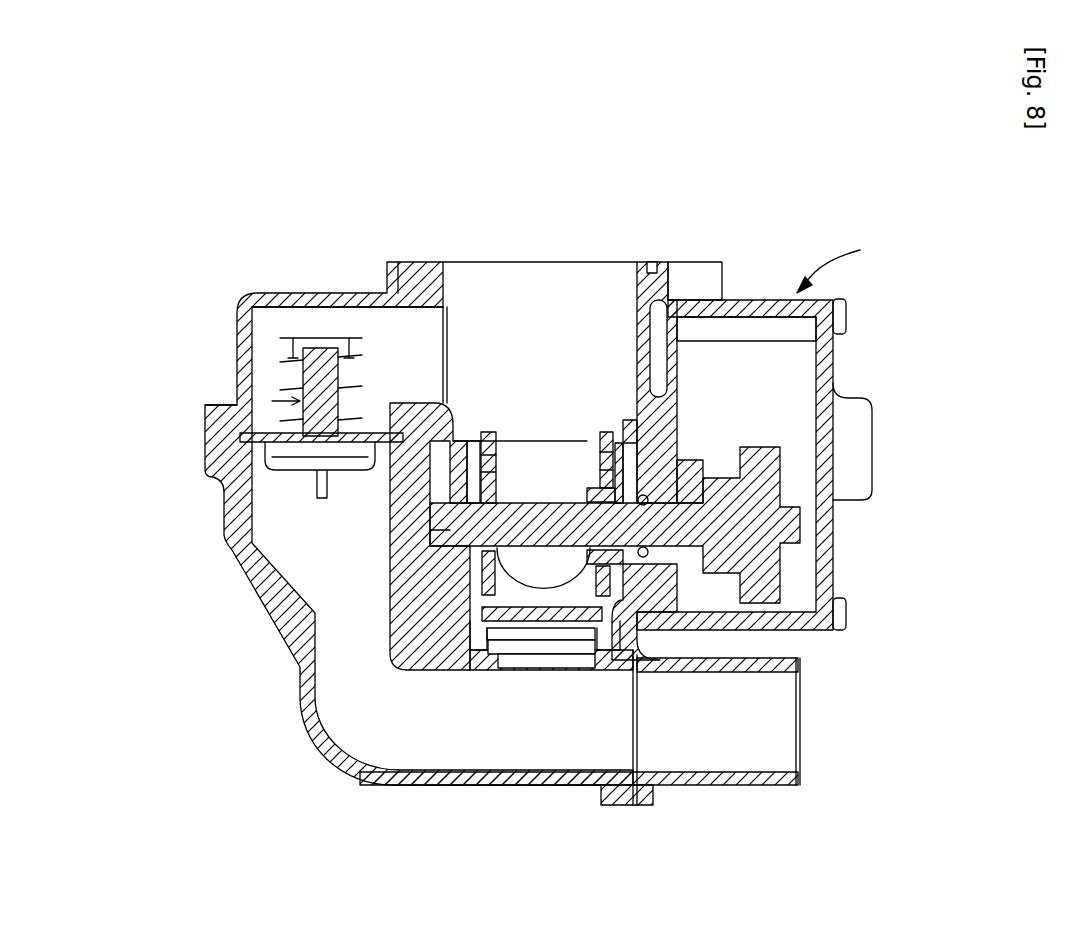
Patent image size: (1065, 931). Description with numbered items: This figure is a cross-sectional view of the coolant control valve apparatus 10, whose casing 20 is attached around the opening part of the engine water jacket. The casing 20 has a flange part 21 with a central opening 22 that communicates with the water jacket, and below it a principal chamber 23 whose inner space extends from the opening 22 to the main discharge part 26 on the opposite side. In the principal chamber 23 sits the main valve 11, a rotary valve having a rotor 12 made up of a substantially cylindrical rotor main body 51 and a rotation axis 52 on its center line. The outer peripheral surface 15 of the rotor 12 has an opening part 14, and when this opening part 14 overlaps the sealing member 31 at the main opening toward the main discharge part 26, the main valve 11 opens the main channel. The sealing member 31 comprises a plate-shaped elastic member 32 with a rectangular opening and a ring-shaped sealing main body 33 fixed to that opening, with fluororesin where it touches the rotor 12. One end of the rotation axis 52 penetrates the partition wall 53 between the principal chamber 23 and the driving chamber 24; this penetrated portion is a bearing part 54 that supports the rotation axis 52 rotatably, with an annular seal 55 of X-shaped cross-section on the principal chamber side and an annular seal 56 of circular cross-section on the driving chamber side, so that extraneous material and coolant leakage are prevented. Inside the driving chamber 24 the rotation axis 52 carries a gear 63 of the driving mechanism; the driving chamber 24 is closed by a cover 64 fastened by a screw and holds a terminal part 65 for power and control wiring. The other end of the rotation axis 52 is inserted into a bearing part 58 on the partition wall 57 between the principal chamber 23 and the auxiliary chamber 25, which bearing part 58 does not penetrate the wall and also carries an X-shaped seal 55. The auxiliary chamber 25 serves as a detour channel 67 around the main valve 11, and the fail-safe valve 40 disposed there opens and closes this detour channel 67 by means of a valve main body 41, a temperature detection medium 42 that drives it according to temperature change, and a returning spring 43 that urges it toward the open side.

The coolant control valve apparatus 10 is at (844, 257).
The main valve 11 is at (548, 430).
The rotor 12 is at (478, 440).
The opening part 14 is at (596, 440).
The outer peripheral surface 15 is at (485, 620).
The casing 20 is at (435, 265).
The flange part 21 is at (695, 265).
The opening 22 is at (637, 290).
The principal chamber 23 is at (458, 620).
The driving chamber 24 is at (760, 355).
The auxiliary chamber 25 is at (290, 330).
The main discharge part 26 is at (740, 775).
The sealing member 31 is at (637, 600).
The elastic member 32 is at (530, 622).
The sealing main body 33 is at (577, 620).
The fail-safe valve 40 is at (270, 401).
The valve main body 41 is at (348, 468).
The temperature detection medium 42 is at (327, 370).
The returning spring 43 is at (345, 388).
The rotor main body 51 is at (492, 480).
The rotation axis 52 is at (555, 510).
The partition wall 53 is at (655, 468).
The bearing part 54 is at (690, 495).
The seal 55 is at (430, 568).
The seal 56 is at (675, 605).
The partition wall 57 is at (395, 665).
The bearing part 58 is at (430, 535).
The gear 63 is at (763, 570).
The cover 64 is at (827, 558).
The terminal part 65 is at (870, 460).
The detour channel 67 is at (275, 500).